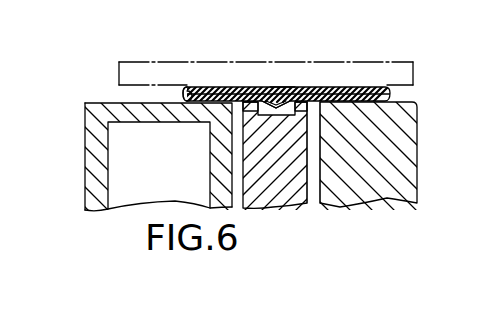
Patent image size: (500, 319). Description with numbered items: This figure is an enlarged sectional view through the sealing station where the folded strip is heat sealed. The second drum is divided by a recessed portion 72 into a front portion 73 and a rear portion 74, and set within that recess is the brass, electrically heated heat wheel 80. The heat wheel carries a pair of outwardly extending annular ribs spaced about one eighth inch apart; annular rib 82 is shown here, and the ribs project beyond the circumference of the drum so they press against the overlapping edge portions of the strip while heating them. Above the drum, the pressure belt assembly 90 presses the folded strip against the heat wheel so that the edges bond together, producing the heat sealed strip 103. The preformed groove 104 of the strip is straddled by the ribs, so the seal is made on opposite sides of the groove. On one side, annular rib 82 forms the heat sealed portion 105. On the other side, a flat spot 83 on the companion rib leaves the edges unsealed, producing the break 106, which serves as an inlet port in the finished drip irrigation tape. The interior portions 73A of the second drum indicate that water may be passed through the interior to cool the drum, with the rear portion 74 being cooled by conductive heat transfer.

The pressure belt assembly 90 is at (133, 62).
The heat sealed strip 103 is at (387, 97).
The groove 104 is at (281, 87).
The heat sealed portion 105 is at (303, 93).
The break 106 is at (252, 88).
The front portion 73 is at (90, 160).
The interior portions 73A is at (181, 187).
The rear portion 74 is at (403, 153).
The heat wheel 80 is at (273, 190).
The recessed portion 72 is at (312, 200).
The annular rib 82 is at (298, 110).
The flat spot 83 is at (247, 107).